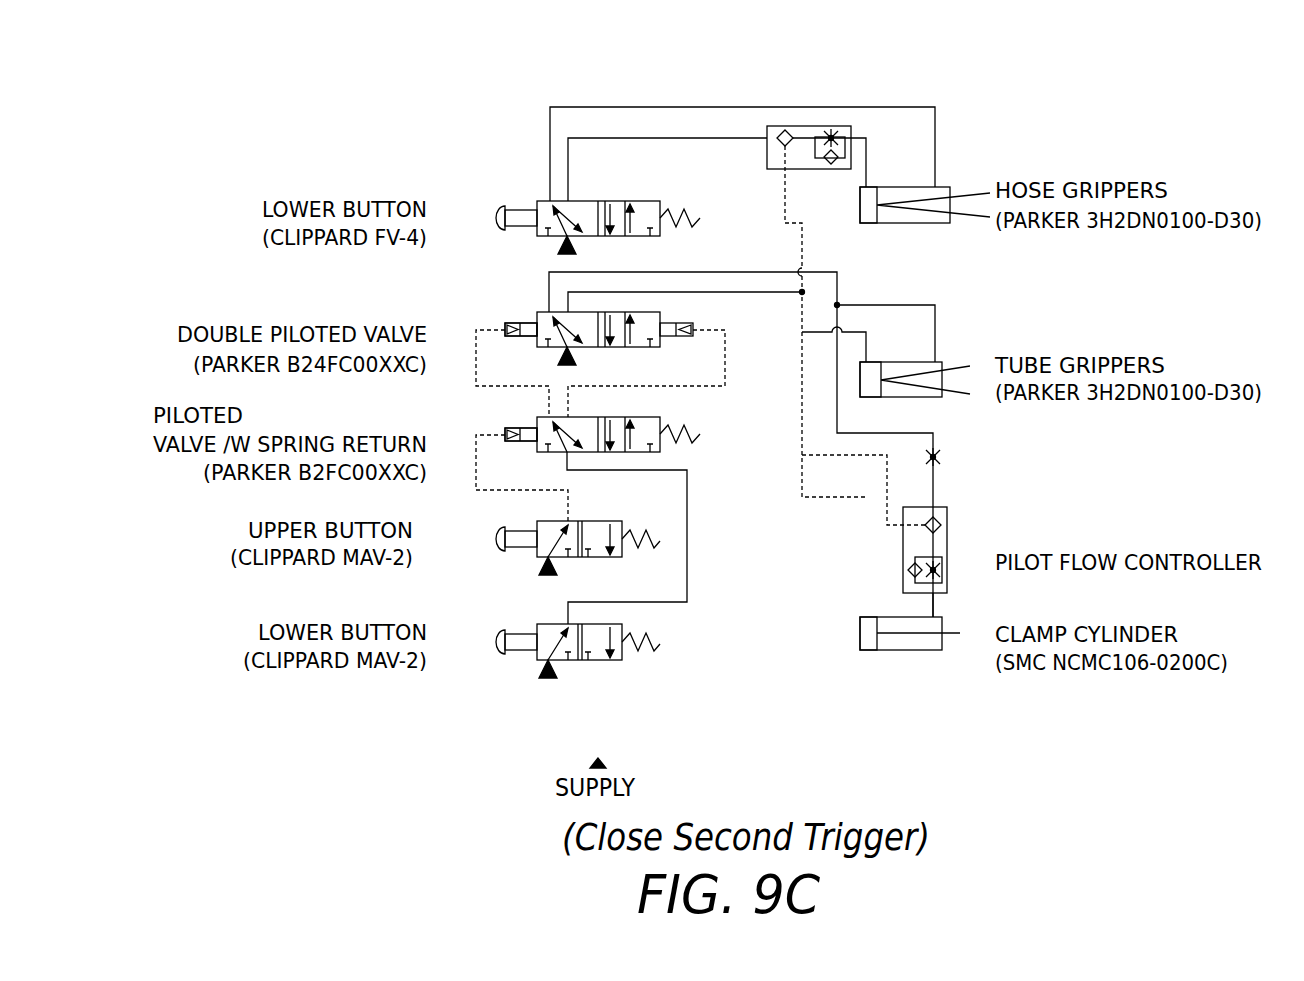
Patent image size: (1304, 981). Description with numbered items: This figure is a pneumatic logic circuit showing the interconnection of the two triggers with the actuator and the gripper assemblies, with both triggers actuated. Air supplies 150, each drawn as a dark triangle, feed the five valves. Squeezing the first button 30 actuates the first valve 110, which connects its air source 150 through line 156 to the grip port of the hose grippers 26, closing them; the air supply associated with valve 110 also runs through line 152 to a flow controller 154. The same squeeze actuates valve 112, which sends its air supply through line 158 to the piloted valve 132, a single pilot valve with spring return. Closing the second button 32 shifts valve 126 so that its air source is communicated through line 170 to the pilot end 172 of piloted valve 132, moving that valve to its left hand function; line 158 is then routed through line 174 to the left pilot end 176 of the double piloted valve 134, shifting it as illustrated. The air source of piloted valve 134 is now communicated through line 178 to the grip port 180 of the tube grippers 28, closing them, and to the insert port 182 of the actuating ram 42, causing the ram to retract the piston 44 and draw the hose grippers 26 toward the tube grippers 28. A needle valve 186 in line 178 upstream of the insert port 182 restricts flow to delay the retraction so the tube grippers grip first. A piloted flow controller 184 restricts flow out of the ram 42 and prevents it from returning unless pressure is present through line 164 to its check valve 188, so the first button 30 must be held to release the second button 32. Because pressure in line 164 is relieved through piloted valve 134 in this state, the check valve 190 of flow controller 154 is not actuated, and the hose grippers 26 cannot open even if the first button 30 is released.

The hose grippers 26 is at (895, 224).
The tube grippers 28 is at (900, 398).
The first button 30 is at (497, 214).
The second button 32 is at (497, 537).
The actuating ram 42 is at (882, 652).
The piston 44 is at (900, 652).
The first valve 110 is at (537, 228).
The valve 112 is at (535, 661).
The valve 126 is at (537, 556).
The piloted valve 132 is at (537, 420).
The piloted valve 134 is at (537, 314).
The air supply 150 is at (578, 355).
The line 152 is at (668, 138).
The flow controller 154 is at (805, 127).
The line 156 is at (690, 107).
The line 158 is at (687, 550).
The line 164 is at (788, 185).
The line 170 is at (570, 498).
The pilot end 172 is at (494, 437).
The line 174 is at (470, 378).
The left pilot end 176 is at (505, 327).
The line 178 is at (692, 272).
The grip port 180 is at (935, 362).
The insert port 182 is at (940, 615).
The piloted flow controller 184 is at (948, 540).
The needle valve 186 is at (945, 455).
The check valve 188 is at (946, 520).
The check valve 190 is at (781, 127).